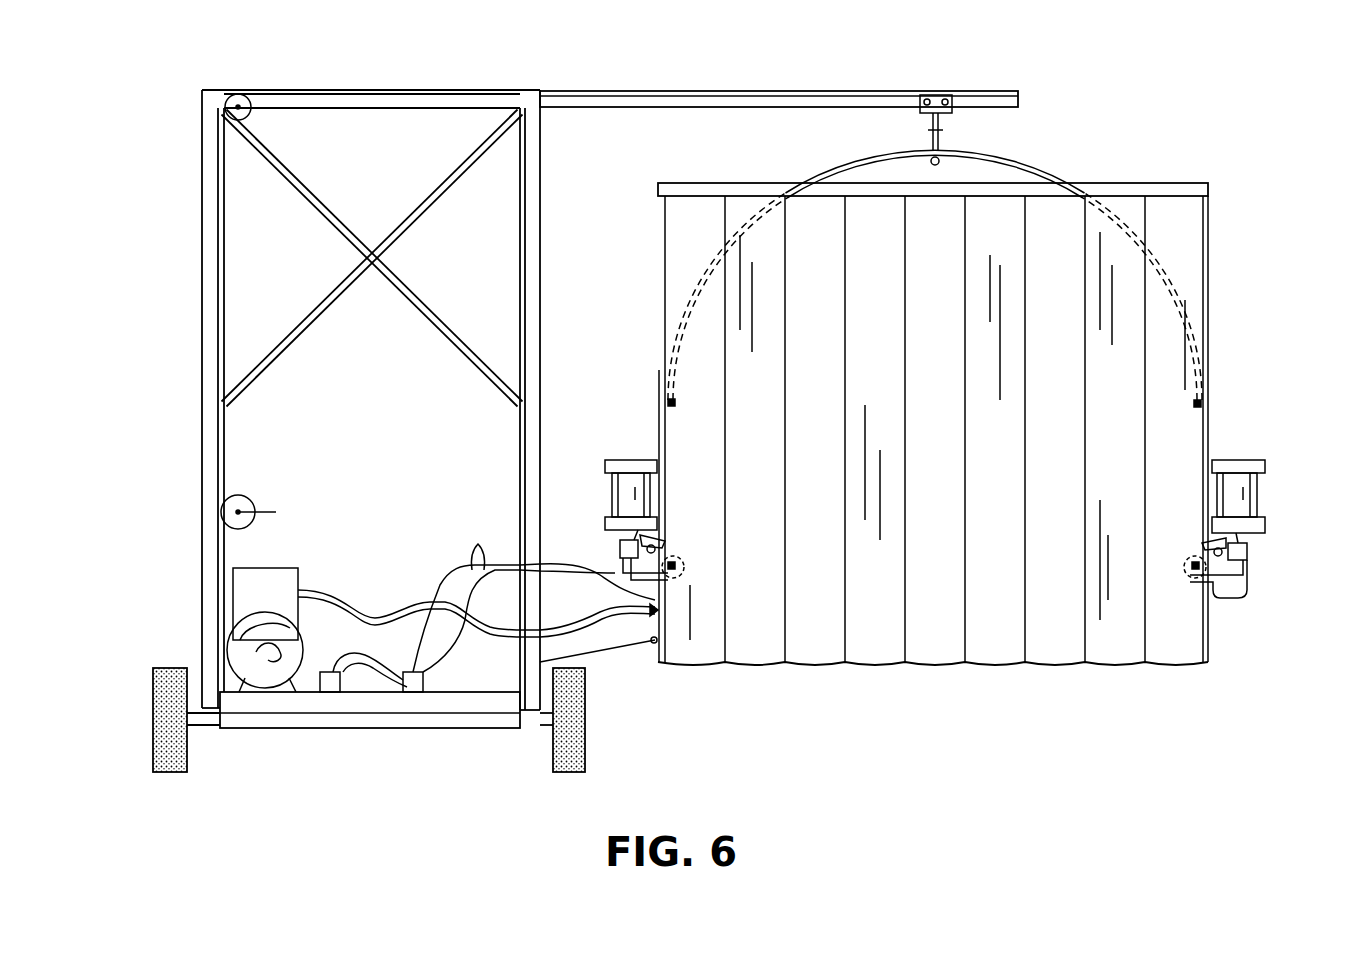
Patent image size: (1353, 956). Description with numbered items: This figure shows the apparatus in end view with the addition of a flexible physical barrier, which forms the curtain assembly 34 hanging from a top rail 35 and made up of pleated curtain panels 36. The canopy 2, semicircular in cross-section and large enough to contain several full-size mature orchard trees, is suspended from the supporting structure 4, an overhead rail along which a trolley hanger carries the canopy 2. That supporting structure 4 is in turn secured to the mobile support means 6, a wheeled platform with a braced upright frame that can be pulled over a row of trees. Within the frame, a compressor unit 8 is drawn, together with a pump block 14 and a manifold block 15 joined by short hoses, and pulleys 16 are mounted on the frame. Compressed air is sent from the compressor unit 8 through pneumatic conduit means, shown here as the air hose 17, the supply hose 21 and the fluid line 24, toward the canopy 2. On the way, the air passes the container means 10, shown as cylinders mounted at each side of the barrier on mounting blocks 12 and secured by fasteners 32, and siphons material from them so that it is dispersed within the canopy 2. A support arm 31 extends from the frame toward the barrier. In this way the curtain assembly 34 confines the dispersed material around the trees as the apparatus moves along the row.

The canopy 2 is at (1030, 162).
The supporting structure 4 is at (737, 92).
The mobile support means 6 is at (267, 707).
The control box 8 is at (280, 578).
The container means 10 is at (608, 498).
The cylinder mounting block 12 is at (673, 542).
The pump block 14 is at (330, 672).
The manifold block 15 is at (413, 705).
The pulley 16 is at (240, 94).
The air hose 17 is at (478, 545).
The supply hose 21 is at (373, 618).
The fluid line 24 is at (610, 620).
The support arm 31 is at (597, 655).
The fastener 32 is at (675, 403).
The curtain assembly 34 is at (985, 433).
The curtain top rail 35 is at (1158, 190).
The curtain panel 36 is at (815, 653).